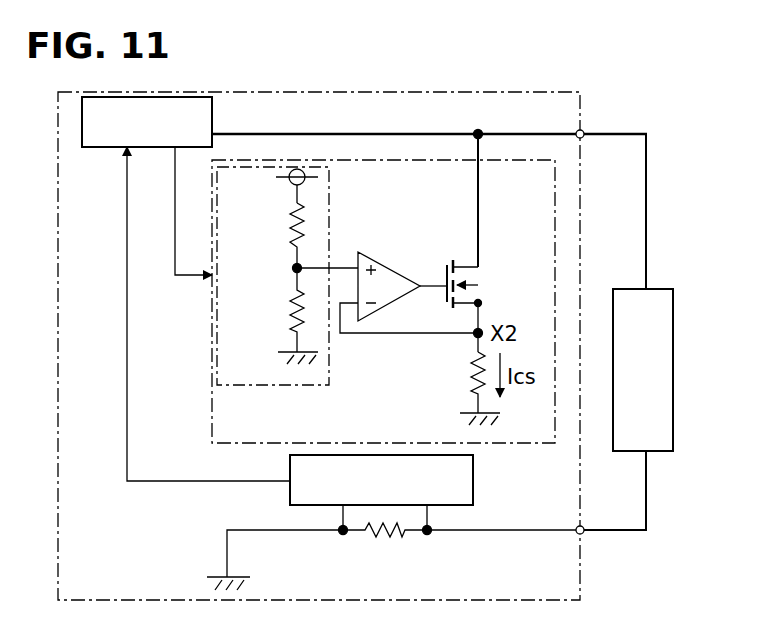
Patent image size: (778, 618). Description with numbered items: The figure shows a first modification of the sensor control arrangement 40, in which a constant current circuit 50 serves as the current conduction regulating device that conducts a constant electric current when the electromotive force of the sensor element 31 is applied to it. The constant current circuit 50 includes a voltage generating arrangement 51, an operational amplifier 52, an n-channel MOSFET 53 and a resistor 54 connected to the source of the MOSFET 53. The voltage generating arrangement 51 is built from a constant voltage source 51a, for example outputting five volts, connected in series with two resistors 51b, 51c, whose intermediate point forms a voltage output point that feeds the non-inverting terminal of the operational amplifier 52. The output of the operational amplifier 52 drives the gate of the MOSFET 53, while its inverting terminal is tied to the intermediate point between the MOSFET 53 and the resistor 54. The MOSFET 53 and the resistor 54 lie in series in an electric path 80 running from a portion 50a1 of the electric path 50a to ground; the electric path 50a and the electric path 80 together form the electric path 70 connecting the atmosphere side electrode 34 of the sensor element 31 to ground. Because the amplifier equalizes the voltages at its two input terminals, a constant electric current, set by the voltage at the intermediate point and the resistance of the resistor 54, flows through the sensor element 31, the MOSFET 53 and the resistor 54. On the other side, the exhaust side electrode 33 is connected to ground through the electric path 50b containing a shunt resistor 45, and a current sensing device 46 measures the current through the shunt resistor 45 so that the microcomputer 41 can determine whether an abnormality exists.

The sensor control arrangement 40 is at (582, 93).
The microcomputer 41 is at (213, 113).
The constant current circuit 50 is at (551, 160).
The electric path 50a is at (647, 224).
The portion of the electric path 50a1 is at (478, 130).
The electric path 50b is at (630, 532).
The voltage generating arrangement 51 is at (329, 207).
The constant voltage source 51a is at (290, 183).
The resistor 51b is at (290, 228).
The resistor 51c is at (290, 328).
The operational amplifier 52 is at (393, 265).
The n-channel MOSFET 53 is at (447, 265).
The resistor 54 is at (474, 387).
The electric path 70 is at (647, 150).
The electric path 80 is at (480, 229).
The sensor element 31 is at (673, 365).
The atmosphere side electrode 34 is at (680, 279).
The exhaust side electrode 33 is at (676, 465).
The shunt resistor 45 is at (382, 534).
The current sensing device 46 is at (473, 490).